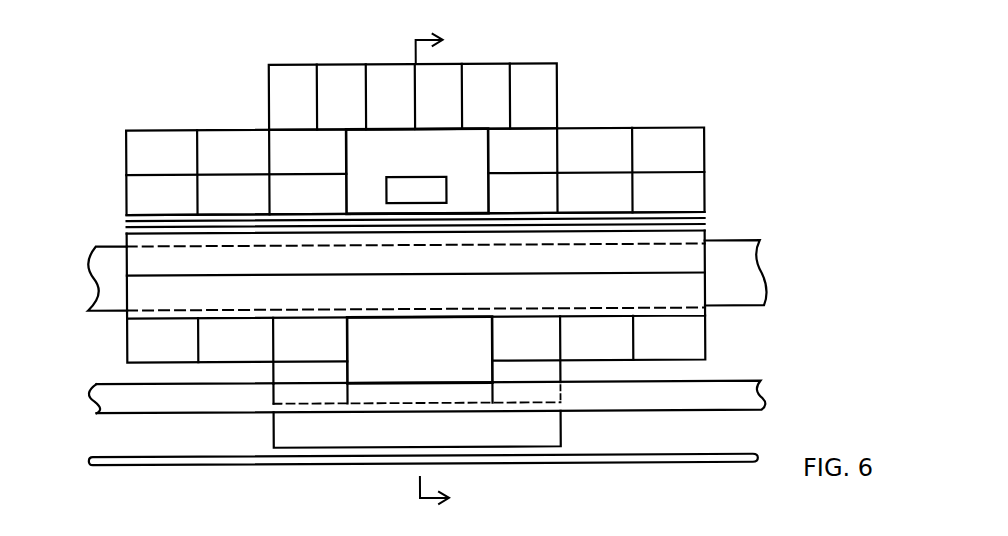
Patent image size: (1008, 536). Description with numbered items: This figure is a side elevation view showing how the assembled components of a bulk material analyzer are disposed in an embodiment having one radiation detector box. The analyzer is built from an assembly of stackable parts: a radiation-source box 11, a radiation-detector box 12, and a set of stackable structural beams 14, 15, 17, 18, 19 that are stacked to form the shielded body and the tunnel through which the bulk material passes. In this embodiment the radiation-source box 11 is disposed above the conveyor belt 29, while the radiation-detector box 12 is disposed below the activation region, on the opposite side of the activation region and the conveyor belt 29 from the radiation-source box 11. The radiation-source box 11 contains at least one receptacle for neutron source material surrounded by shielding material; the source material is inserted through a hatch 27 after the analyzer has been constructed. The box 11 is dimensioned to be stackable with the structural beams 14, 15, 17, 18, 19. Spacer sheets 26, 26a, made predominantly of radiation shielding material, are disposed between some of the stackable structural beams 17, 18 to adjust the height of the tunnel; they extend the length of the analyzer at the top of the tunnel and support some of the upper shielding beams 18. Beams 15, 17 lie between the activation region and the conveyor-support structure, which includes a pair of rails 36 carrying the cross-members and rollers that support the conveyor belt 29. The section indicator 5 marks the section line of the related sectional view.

The section line of FIG. 5 is at (442, 268).
The radiation-source box 11 is at (388, 160).
The radiation-detector box 12 is at (433, 367).
The structural beam 14 is at (563, 436).
The structural beam 15 is at (273, 373).
The structural beam 17 is at (268, 273).
The upper shielding beam 18 is at (706, 130).
The structural beam 19 is at (559, 76).
The spacer sheet 26 is at (707, 228).
The spacer sheet 26a is at (707, 219).
The hatch 27 is at (415, 177).
The conveyor belt 29 is at (767, 277).
The rail 36 is at (730, 381).